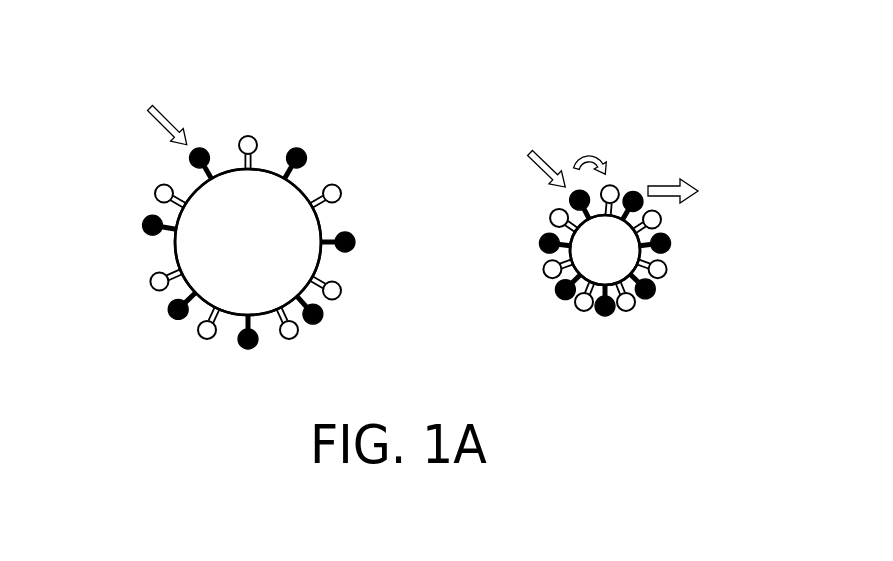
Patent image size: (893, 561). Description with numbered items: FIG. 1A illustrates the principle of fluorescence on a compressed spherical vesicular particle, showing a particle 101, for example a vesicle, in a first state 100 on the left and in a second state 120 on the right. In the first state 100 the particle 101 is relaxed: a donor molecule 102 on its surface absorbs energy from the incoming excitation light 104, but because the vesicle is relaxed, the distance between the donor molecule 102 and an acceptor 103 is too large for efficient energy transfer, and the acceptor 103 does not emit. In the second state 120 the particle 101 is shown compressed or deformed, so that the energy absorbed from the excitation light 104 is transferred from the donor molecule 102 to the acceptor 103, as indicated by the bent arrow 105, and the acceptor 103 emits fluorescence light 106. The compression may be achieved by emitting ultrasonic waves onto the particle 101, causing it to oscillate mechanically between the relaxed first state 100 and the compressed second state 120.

The first state 100 is at (288, 85).
The particle 101 is at (187, 247).
The donor molecule 102 is at (207, 147).
The acceptor 103 is at (249, 143).
The excitation light 104 is at (152, 125).
The bent arrow 105 is at (586, 156).
The fluorescence light 106 is at (662, 183).
The second state 120 is at (656, 85).